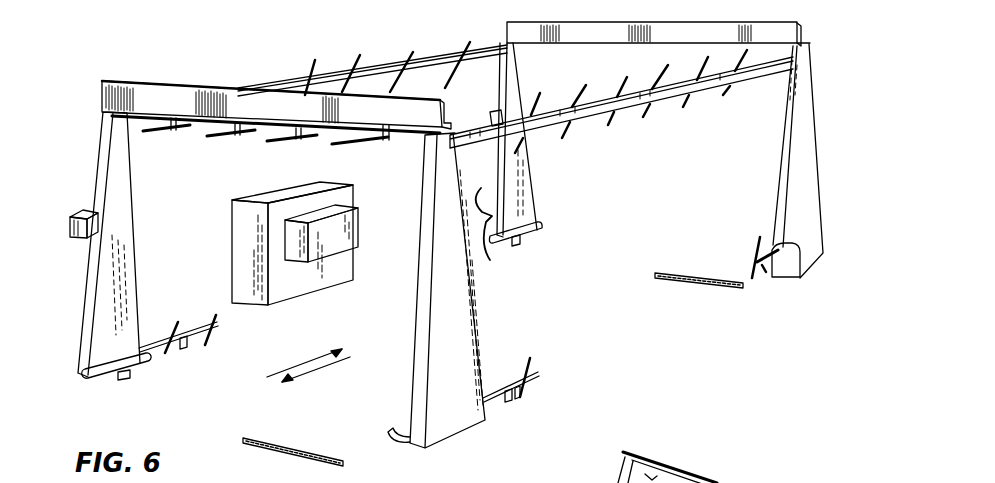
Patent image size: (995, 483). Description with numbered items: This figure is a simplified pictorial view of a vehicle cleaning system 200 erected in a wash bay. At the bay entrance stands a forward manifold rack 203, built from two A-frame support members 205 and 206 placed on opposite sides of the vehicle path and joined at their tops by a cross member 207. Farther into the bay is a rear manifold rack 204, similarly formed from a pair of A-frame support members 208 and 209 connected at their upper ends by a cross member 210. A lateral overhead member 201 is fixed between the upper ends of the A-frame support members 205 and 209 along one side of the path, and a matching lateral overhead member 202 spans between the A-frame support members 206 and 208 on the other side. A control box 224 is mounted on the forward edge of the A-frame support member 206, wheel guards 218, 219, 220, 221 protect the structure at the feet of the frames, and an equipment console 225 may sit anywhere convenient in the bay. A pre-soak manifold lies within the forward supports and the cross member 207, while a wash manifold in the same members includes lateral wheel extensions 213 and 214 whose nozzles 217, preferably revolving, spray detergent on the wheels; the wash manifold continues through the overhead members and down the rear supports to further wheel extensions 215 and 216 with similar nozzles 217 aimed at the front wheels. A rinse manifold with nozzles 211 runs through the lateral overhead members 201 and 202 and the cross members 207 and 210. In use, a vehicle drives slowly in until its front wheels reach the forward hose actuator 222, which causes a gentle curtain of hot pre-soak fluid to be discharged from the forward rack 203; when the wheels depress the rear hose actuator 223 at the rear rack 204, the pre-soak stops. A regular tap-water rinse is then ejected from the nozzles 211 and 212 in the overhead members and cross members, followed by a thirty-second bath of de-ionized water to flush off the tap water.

The vehicle cleaning system 200 is at (624, 133).
The lateral overhead member 201 is at (588, 113).
The lateral overhead member 202 is at (375, 70).
The forward manifold rack 203 is at (482, 297).
The rear manifold rack 204 is at (772, 174).
The A-frame support member 205 is at (515, 321).
The A-frame support member 206 is at (133, 210).
The cross member 207 is at (175, 93).
The A-frame support member 208 is at (533, 168).
The A-frame support member 209 is at (823, 182).
The cross member 210 is at (575, 33).
The nozzles 211 is at (447, 83).
The nozzles 212 is at (372, 140).
The lateral wheel extension 213 is at (157, 340).
The lateral wheel extension 214 is at (530, 382).
The wheel extension 215 is at (485, 210).
The wheel extension 216 is at (800, 262).
The nozzles 217 is at (205, 338).
The wheel guard 218 is at (138, 367).
The wheel guard 219 is at (404, 422).
The wheel guard 220 is at (530, 228).
The wheel guard 221 is at (763, 275).
The forward hose actuator 222 is at (283, 447).
The rear hose actuator 223 is at (672, 283).
The control box 224 is at (72, 213).
The equipment console 225 is at (333, 283).